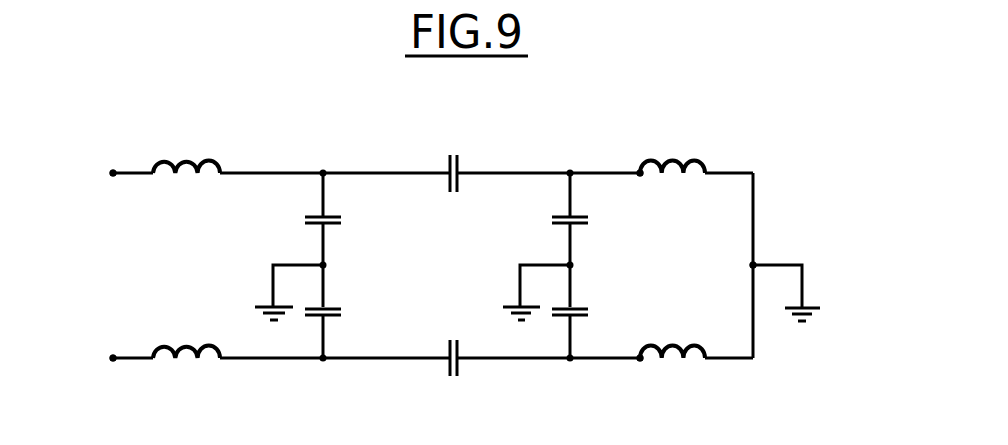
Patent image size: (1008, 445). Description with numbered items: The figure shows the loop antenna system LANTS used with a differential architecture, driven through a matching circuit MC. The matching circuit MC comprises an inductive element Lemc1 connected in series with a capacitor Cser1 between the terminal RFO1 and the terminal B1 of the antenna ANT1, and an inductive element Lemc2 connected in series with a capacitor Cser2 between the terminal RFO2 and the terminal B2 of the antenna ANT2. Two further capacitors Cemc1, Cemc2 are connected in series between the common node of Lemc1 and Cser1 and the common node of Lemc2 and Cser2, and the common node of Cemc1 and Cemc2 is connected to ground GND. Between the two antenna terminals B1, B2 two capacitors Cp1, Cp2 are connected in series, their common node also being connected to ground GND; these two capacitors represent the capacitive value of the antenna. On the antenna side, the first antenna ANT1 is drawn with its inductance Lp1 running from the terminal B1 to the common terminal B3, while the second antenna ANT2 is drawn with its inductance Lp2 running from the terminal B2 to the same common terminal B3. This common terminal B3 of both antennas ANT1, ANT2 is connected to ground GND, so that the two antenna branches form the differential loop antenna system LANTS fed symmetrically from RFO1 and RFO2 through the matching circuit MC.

The terminal RFO1 is at (82, 174).
The terminal RFO2 is at (82, 358).
The inductive element Lemc1 is at (187, 181).
The inductive element Lemc2 is at (187, 366).
The capacitor Cemc1 is at (362, 222).
The capacitor Cemc2 is at (362, 314).
The capacitor Cser1 is at (452, 186).
The capacitor Cser2 is at (450, 371).
The capacitor Cp1 is at (592, 222).
The capacitor Cp2 is at (592, 314).
The antenna inductance Lp1 is at (672, 181).
The antenna inductance Lp2 is at (672, 365).
The terminal B1 is at (639, 171).
The terminal B2 is at (639, 360).
The common terminal B3 is at (751, 265).
The antenna ANT1 is at (675, 158).
The antenna ANT2 is at (675, 342).
The loop antenna system LANTS is at (783, 168).
The matching circuit MC is at (417, 146).
The ground GND is at (538, 293).